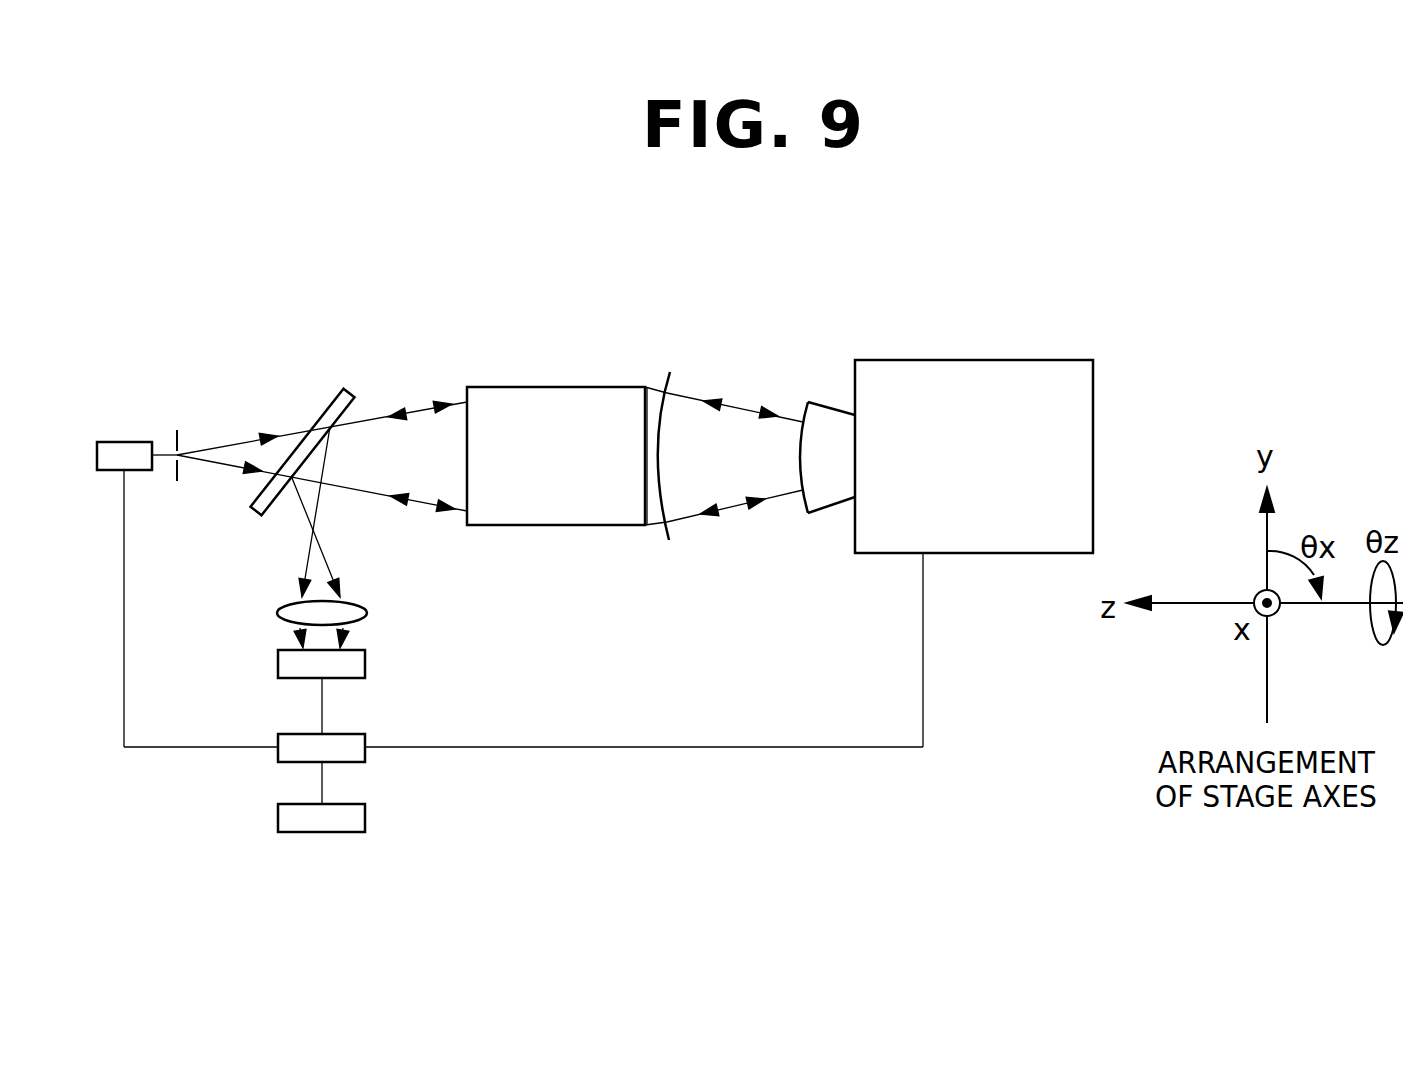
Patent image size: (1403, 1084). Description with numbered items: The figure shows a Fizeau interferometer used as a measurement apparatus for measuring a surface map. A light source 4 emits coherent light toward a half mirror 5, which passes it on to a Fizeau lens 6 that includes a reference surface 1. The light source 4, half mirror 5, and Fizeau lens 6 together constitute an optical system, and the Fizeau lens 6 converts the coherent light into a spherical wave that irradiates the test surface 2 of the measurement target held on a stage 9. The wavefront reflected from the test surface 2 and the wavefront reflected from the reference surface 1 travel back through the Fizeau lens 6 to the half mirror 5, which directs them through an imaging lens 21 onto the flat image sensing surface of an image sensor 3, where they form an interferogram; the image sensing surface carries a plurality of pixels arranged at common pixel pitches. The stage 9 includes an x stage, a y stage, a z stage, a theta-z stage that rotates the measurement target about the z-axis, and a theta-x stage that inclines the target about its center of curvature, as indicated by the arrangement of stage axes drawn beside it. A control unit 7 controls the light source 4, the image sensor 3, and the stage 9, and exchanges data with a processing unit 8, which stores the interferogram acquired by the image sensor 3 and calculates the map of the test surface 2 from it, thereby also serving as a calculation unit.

The reference surface 1 is at (672, 368).
The test surface 2 is at (808, 400).
The image sensor 3 is at (367, 670).
The light source 4 is at (105, 442).
The half mirror 5 is at (338, 388).
The Fizeau lens 6 is at (467, 543).
The control unit 7 is at (367, 755).
The processing unit 8 is at (348, 833).
The stage 9 is at (1065, 360).
The imaging lens 21 is at (367, 615).